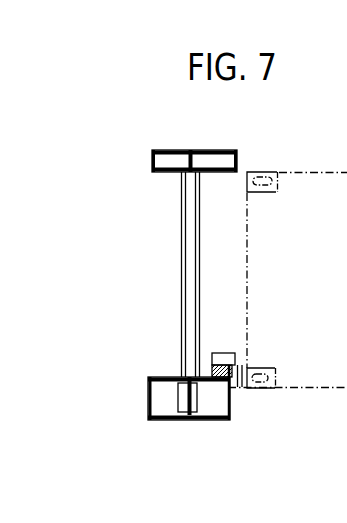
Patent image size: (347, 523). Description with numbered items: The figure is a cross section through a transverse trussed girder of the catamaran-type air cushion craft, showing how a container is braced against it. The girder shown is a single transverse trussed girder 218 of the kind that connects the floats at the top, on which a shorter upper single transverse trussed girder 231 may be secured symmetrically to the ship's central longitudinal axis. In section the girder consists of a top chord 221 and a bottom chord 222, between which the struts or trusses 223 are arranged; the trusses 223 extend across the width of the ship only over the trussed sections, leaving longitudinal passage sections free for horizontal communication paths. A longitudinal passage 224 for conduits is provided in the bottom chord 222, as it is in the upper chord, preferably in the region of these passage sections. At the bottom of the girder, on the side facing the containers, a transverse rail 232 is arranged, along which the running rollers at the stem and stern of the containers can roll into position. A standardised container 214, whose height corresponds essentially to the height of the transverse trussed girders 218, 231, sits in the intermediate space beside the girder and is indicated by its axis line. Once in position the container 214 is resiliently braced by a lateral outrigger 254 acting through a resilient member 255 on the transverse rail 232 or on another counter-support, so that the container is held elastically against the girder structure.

The top chord 221 is at (182, 149).
The trusses 223 is at (187, 287).
The single transverse trussed girder 218 is at (297, 246).
The upper single transverse trussed girder 231 is at (247, 152).
The container 214 is at (293, 378).
The lateral outrigger 254 is at (227, 352).
The resilient member 255 is at (233, 368).
The bottom chord 222 is at (178, 423).
The transverse rail 232 is at (221, 385).
The longitudinal passage 224 is at (197, 417).